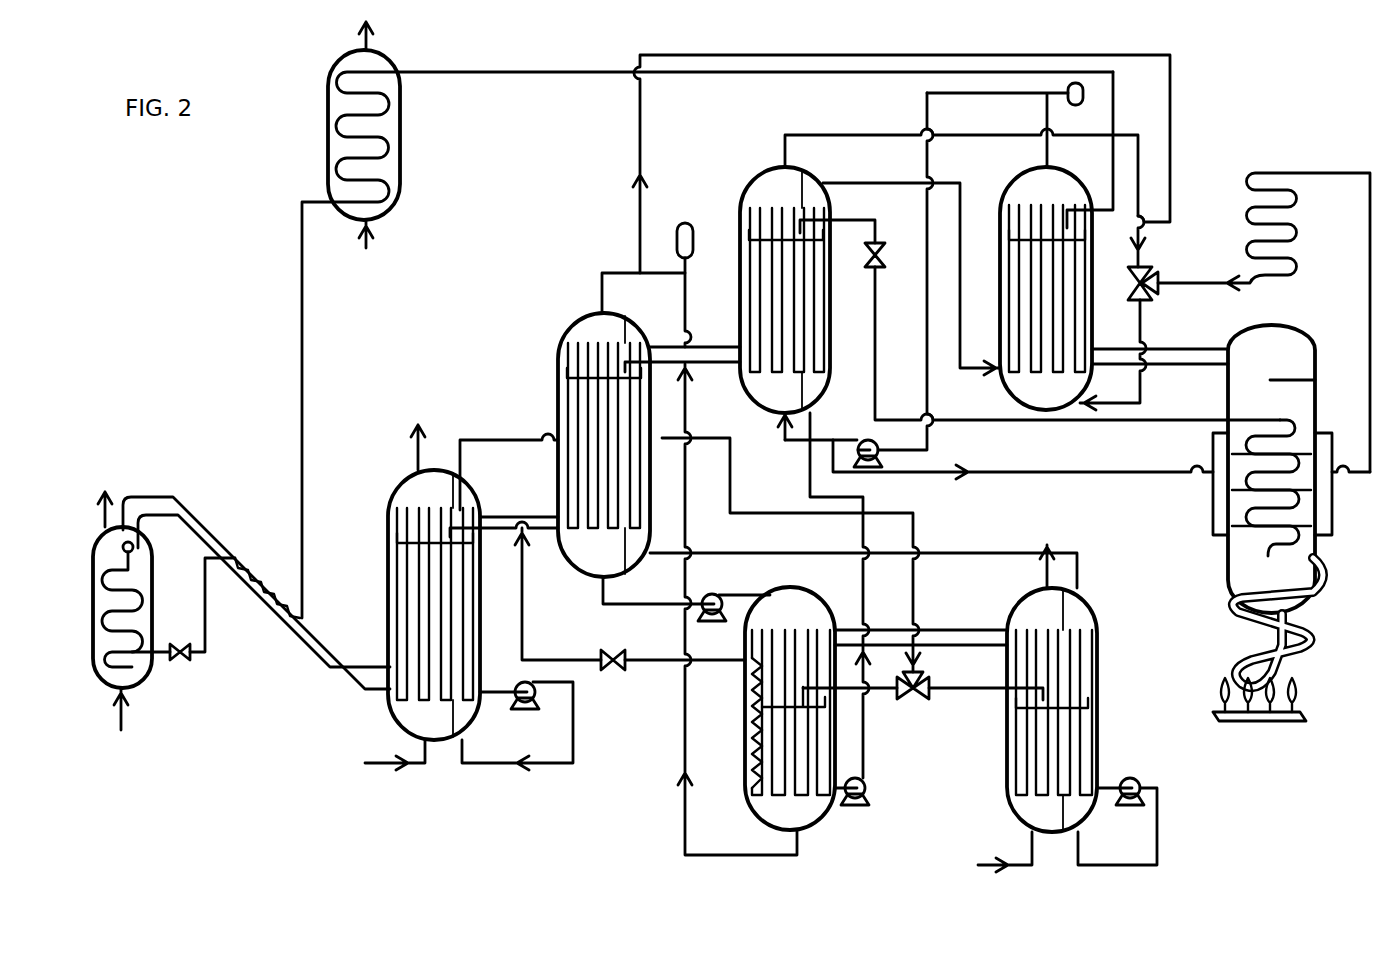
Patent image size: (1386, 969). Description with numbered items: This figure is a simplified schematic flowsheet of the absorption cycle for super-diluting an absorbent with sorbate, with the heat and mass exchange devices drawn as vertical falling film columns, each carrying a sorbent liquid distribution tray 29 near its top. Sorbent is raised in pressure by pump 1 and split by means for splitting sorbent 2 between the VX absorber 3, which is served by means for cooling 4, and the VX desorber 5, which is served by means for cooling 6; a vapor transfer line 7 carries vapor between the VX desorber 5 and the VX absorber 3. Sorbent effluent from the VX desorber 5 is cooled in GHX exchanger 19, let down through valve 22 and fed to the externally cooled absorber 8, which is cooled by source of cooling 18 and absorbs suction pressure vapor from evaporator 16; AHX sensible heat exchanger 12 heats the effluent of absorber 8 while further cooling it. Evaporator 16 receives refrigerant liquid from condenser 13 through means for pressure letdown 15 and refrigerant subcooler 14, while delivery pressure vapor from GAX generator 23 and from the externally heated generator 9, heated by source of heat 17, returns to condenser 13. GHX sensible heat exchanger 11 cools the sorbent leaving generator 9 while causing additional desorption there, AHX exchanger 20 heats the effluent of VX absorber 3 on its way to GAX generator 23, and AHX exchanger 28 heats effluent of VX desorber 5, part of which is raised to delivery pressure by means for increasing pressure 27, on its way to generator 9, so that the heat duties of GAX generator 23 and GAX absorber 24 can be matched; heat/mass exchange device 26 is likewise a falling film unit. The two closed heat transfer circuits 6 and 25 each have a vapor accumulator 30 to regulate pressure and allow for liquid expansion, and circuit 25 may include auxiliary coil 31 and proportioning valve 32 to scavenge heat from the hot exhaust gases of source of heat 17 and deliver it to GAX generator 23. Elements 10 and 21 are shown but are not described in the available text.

The pump 1 is at (528, 705).
The means for splitting sorbent 2 is at (920, 700).
The VX absorber 3 is at (1007, 767).
The means for cooling 4 is at (1004, 862).
The VX desorber 5 is at (815, 592).
The heat transfer circuit 6 is at (720, 597).
The vapor transfer line 7 is at (965, 630).
The externally cooled absorber 8 is at (388, 590).
The externally heated generator 9 is at (1228, 565).
The valve 10 is at (879, 248).
The GHX sensible heat exchanger 11 is at (1280, 418).
The AHX sensible heat exchanger 12 is at (462, 677).
The condenser 13 is at (400, 175).
The refrigerant subcooler 14 is at (255, 572).
The means for pressure letdown 15 is at (192, 656).
The evaporator 16 is at (148, 680).
The source of heat 17 is at (1297, 690).
The source of cooling 18 is at (372, 763).
The GHX exchanger 19 is at (750, 727).
The AHX exchanger 20 is at (1085, 745).
The pump 21 is at (1133, 778).
The valve 22 is at (620, 650).
The GAX generator 23 is at (998, 284).
The GAX absorber 24 is at (830, 303).
The heat transfer circuit 25 is at (862, 440).
The heat/mass exchange device 26 is at (558, 482).
The means for increasing pressure 27 is at (867, 788).
The AHX exchanger 28 is at (818, 336).
The sorbent liquid distribution tray 29 is at (558, 390).
The vapor accumulator 30 is at (681, 221).
The auxiliary coil 31 is at (1247, 178).
The proportioning valve 32 is at (1152, 276).